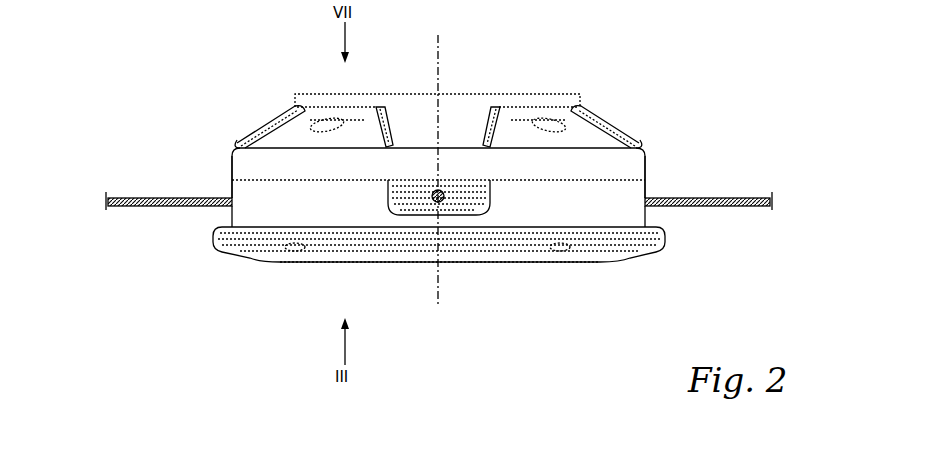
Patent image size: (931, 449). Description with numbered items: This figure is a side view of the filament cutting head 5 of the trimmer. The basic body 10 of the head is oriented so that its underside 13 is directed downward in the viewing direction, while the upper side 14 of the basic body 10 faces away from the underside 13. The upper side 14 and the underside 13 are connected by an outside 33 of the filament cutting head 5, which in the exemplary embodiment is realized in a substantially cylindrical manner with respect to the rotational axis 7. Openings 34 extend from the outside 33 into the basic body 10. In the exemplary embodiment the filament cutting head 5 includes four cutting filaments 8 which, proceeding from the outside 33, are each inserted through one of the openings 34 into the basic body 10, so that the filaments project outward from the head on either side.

The filament cutting head 5 is at (706, 100).
The rotational axis 7 is at (440, 50).
The cutting filaments 8 is at (145, 196).
The basic body 10 is at (215, 238).
The underside 13 is at (268, 260).
The upper side 14 is at (264, 106).
The outside 33 is at (225, 168).
The openings 34 is at (215, 210).